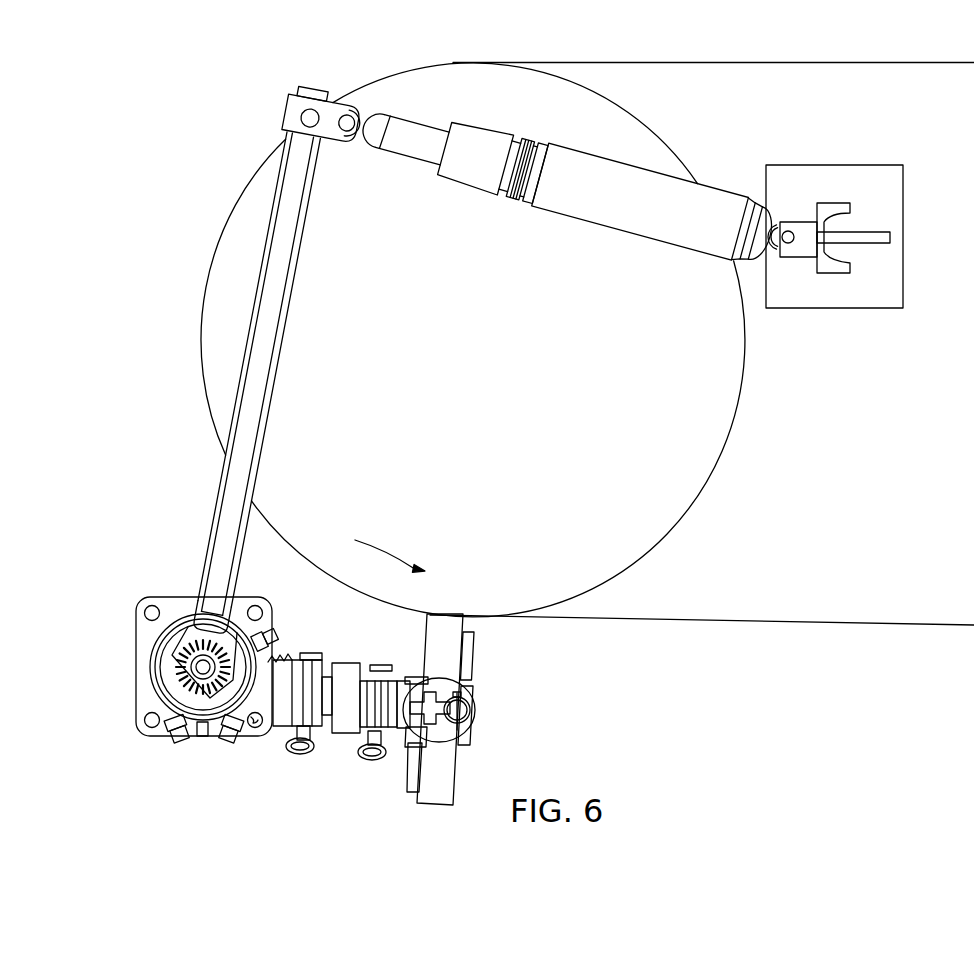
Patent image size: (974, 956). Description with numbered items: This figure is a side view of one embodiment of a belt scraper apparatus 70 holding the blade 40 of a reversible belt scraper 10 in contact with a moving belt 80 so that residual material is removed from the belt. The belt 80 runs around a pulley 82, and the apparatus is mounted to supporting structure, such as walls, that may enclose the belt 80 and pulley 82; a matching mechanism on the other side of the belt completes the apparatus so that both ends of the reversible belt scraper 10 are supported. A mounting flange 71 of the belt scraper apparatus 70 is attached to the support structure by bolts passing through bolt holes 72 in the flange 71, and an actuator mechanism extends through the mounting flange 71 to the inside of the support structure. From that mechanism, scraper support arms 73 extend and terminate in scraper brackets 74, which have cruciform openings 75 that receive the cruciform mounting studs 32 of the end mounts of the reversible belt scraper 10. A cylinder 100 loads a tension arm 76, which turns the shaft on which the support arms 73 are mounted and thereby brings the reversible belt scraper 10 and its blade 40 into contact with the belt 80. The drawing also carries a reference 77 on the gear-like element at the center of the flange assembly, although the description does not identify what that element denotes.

The reversible belt scraper 10 is at (478, 700).
The cruciform mounting studs 32 is at (458, 696).
The blade 40 is at (426, 629).
The belt scraper apparatus 70 is at (225, 777).
The mounting flange 71 is at (135, 727).
The bolt holes 72 is at (145, 609).
The scraper support arms 73 is at (322, 717).
The scraper brackets 74 is at (455, 762).
The cruciform openings 75 is at (418, 733).
The tension arms 76 is at (212, 532).
The gear 77 is at (152, 677).
The belt 80 is at (676, 63).
The pulley 82 is at (658, 527).
The cylinders 100 is at (725, 190).